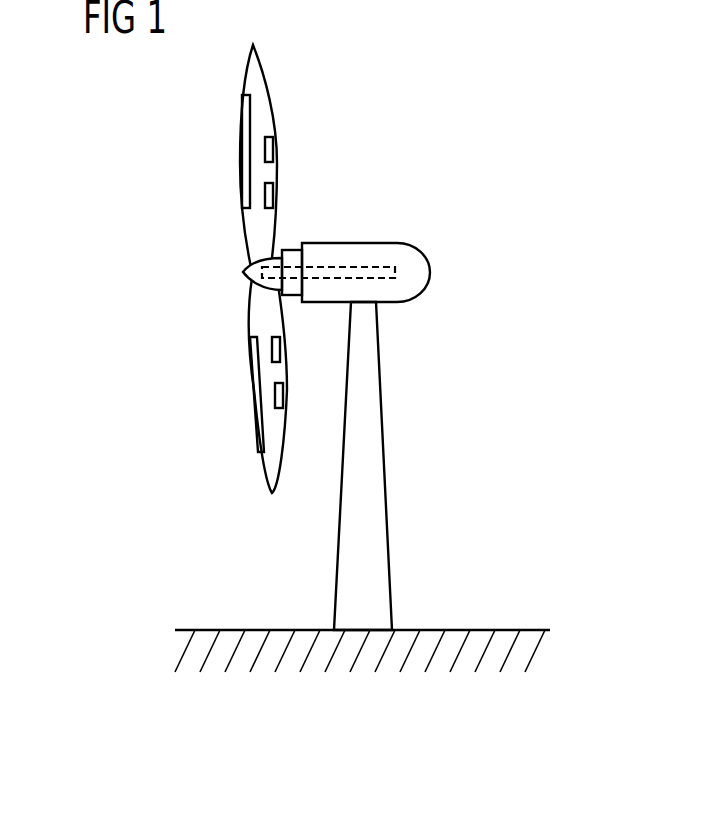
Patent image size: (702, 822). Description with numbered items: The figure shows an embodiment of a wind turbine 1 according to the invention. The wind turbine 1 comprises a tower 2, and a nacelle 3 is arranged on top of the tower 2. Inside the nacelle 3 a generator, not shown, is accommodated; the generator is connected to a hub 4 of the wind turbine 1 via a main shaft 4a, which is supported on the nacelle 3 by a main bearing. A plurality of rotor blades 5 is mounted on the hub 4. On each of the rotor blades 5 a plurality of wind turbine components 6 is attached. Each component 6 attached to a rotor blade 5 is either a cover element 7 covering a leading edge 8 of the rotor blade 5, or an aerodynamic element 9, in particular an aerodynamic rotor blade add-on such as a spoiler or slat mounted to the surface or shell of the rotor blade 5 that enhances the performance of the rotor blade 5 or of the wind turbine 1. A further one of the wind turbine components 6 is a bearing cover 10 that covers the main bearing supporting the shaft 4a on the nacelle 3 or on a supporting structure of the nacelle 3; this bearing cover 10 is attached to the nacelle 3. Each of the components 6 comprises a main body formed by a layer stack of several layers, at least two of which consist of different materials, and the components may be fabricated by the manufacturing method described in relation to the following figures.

The wind turbine 1 is at (538, 186).
The tower 2 is at (387, 492).
The nacelle 3 is at (430, 272).
The hub 4 is at (243, 272).
The main shaft 4a is at (375, 268).
The rotor blade 5 is at (268, 471).
The wind turbine component 6 is at (251, 273).
The cover element 7 is at (243, 163).
The leading edge 8 is at (245, 229).
The aerodynamic element 9 is at (272, 146).
The bearing cover 10 is at (292, 254).